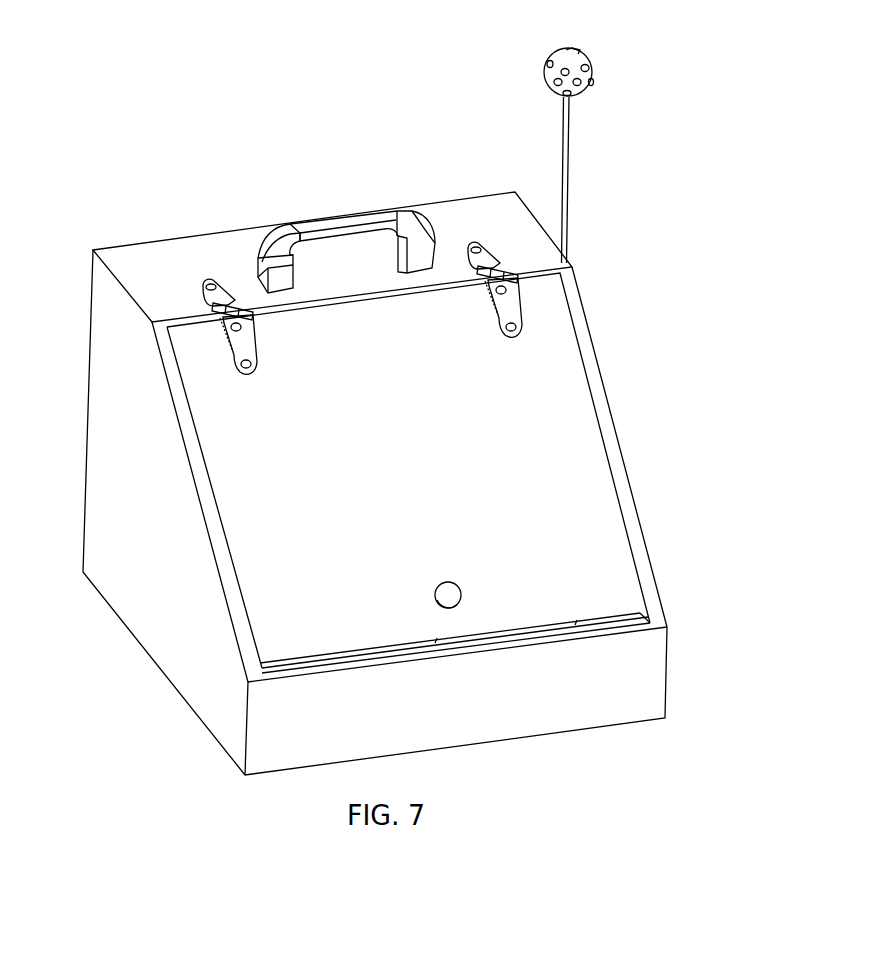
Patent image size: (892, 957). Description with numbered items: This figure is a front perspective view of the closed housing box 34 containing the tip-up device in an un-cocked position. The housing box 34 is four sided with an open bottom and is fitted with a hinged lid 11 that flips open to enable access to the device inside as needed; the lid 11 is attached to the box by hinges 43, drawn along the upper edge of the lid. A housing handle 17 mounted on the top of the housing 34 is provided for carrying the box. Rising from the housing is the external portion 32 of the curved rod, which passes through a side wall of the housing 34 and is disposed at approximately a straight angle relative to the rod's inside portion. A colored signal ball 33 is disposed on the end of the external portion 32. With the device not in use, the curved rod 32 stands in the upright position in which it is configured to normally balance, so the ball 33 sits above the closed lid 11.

The hinged lid 11 is at (567, 543).
The housing handle 17 is at (350, 223).
The curved rod external portion 32 is at (568, 184).
The colored signal ball 33 is at (558, 53).
The housing box 34 is at (150, 595).
The hinges 43 is at (512, 302).